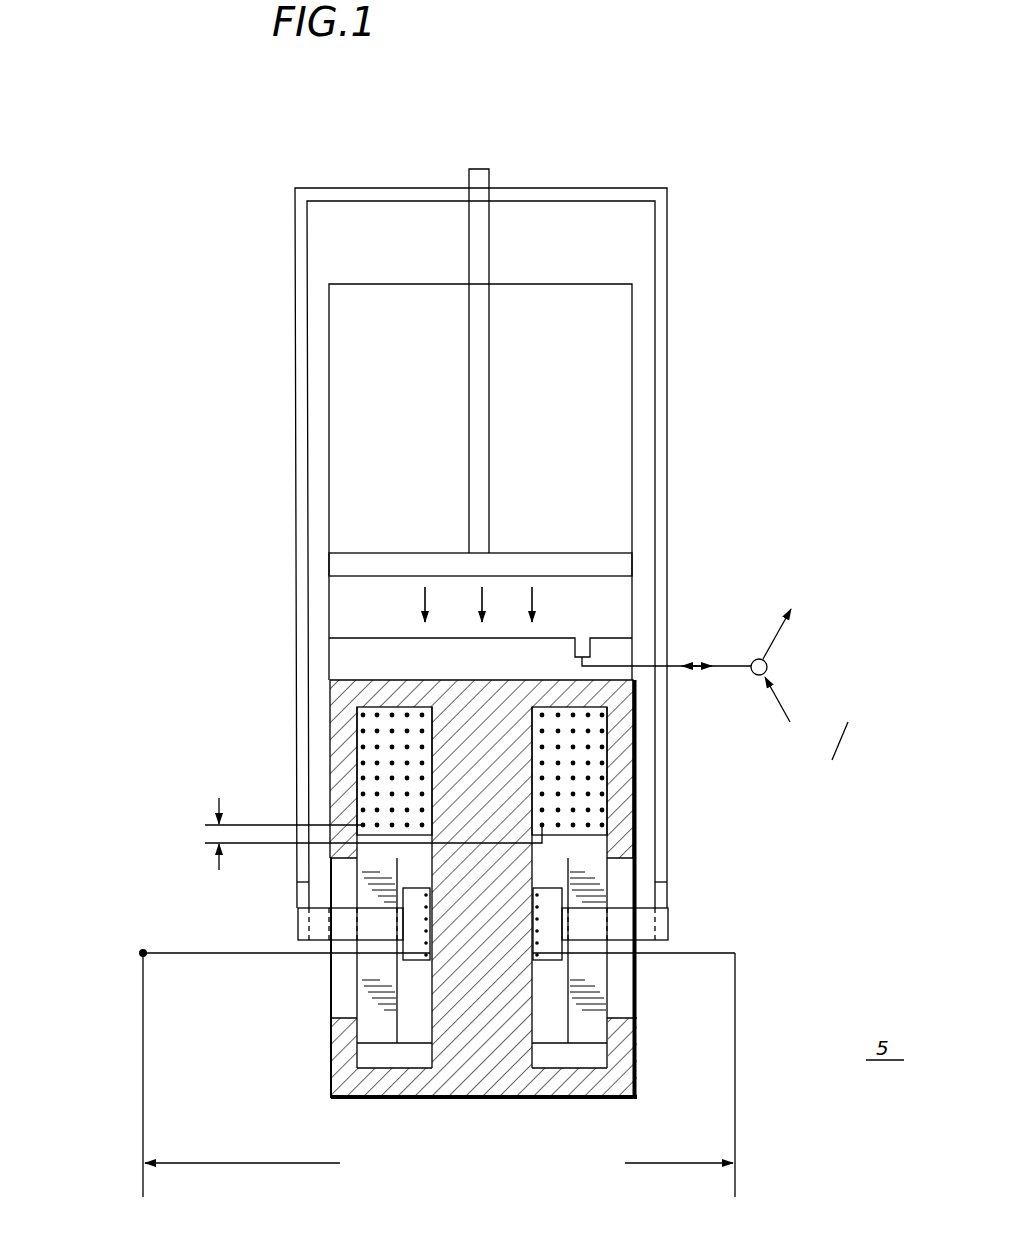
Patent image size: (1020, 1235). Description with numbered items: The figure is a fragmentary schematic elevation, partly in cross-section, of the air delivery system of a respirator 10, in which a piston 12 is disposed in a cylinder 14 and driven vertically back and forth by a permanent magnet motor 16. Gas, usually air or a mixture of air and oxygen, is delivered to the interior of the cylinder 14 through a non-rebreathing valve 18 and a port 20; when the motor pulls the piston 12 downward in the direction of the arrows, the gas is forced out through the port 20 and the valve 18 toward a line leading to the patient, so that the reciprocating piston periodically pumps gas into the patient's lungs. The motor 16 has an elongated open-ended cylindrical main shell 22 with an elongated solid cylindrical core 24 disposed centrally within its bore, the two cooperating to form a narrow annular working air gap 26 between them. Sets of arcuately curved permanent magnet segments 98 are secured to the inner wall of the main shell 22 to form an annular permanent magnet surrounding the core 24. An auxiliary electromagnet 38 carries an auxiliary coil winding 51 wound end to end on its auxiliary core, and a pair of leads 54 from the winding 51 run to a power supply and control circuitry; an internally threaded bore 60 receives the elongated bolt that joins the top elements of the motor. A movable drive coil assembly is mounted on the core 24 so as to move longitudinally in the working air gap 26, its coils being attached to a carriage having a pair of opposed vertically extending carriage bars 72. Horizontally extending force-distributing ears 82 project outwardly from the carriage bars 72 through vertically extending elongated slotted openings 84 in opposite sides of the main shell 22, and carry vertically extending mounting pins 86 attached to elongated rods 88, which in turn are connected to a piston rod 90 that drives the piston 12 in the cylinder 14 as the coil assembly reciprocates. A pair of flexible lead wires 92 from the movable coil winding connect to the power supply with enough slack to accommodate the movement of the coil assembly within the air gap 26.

The respirator 10 is at (290, 606).
The piston 12 is at (392, 560).
The cylinder 14 is at (330, 400).
The permanent magnet motor 16 is at (622, 754).
The non-rebreathing valve 18 is at (752, 656).
The port 20 is at (578, 653).
The main shell 22 is at (640, 1032).
The core 24 is at (455, 695).
The working air gap 26 is at (538, 862).
The auxiliary electromagnet 38 is at (372, 770).
The auxiliary coil winding 51 is at (590, 798).
The leads 54 is at (230, 826).
The internally threaded bore 60 is at (550, 900).
The carriage bars 72 is at (407, 888).
The force-distributing ears 82 is at (312, 922).
The slotted openings 84 is at (334, 1020).
The mounting pins 86 is at (298, 892).
The rods 88 is at (298, 456).
The piston rod 90 is at (469, 375).
The lead wires 92 is at (267, 952).
The permanent magnet segments 98 is at (380, 1040).